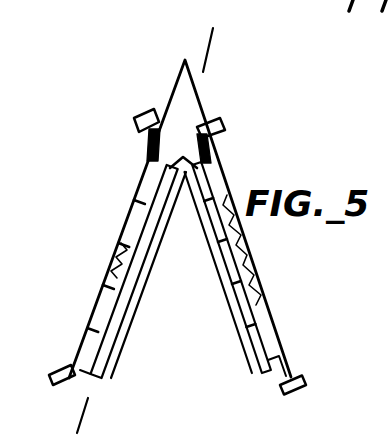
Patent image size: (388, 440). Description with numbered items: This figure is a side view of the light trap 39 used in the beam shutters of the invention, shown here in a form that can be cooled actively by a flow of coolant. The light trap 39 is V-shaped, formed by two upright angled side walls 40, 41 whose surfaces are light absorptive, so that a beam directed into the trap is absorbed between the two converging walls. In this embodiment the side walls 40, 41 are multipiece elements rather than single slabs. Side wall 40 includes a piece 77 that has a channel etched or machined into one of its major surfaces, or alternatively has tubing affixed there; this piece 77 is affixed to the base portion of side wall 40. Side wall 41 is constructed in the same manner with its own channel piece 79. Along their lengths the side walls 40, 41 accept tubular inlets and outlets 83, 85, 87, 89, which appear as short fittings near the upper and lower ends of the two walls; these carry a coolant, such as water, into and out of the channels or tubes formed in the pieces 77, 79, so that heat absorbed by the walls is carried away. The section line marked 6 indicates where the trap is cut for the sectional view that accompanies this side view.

The section line 6- 6 is at (212, 27).
The light trap 39 is at (125, 172).
The side wall 40 is at (123, 240).
The side wall 41 is at (257, 305).
The piece 77 is at (131, 306).
The channel piece 79 is at (240, 332).
The tubular inlet or outlet 83 is at (64, 367).
The tubular inlet or outlet 85 is at (158, 120).
The tubular inlet or outlet 87 is at (295, 378).
The tubular inlet or outlet 89 is at (212, 118).